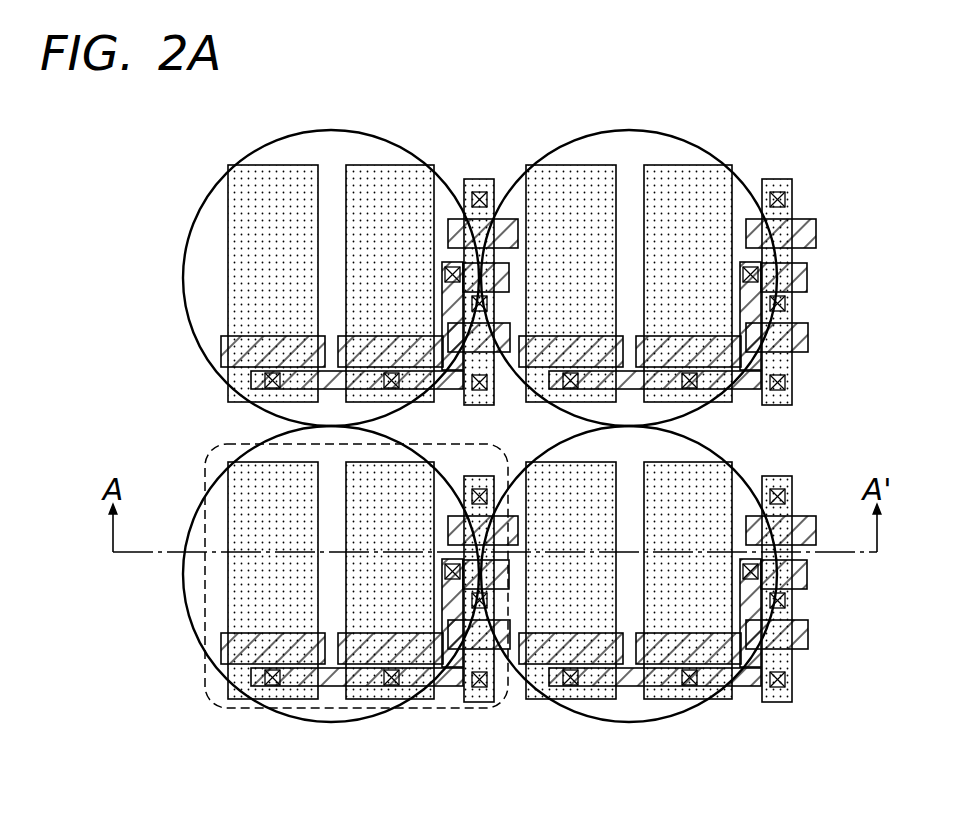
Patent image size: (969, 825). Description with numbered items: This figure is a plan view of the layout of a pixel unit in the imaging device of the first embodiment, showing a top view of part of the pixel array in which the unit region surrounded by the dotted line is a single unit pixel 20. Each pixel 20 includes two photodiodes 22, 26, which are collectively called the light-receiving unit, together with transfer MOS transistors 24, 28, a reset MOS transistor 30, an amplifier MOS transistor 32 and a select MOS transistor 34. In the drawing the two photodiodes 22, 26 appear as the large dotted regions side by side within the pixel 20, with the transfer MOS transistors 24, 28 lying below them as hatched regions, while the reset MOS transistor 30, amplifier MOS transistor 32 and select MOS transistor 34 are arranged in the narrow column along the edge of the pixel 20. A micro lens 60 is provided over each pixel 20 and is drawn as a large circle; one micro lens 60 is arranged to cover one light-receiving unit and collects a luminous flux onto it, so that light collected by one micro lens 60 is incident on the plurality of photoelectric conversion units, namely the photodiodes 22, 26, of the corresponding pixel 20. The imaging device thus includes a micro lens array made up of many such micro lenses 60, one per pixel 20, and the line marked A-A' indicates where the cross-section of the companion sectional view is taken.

The pixel 20 is at (213, 456).
The photodiode 22 is at (278, 170).
The transfer MOS transistor 24 is at (255, 375).
The photodiode 26 is at (388, 170).
The transfer MOS transistor 28 is at (415, 355).
The reset MOS transistor 30 is at (495, 352).
The amplifier MOS transistor 32 is at (495, 235).
The select MOS transistor 34 is at (478, 195).
The micro lens 60 is at (331, 130).